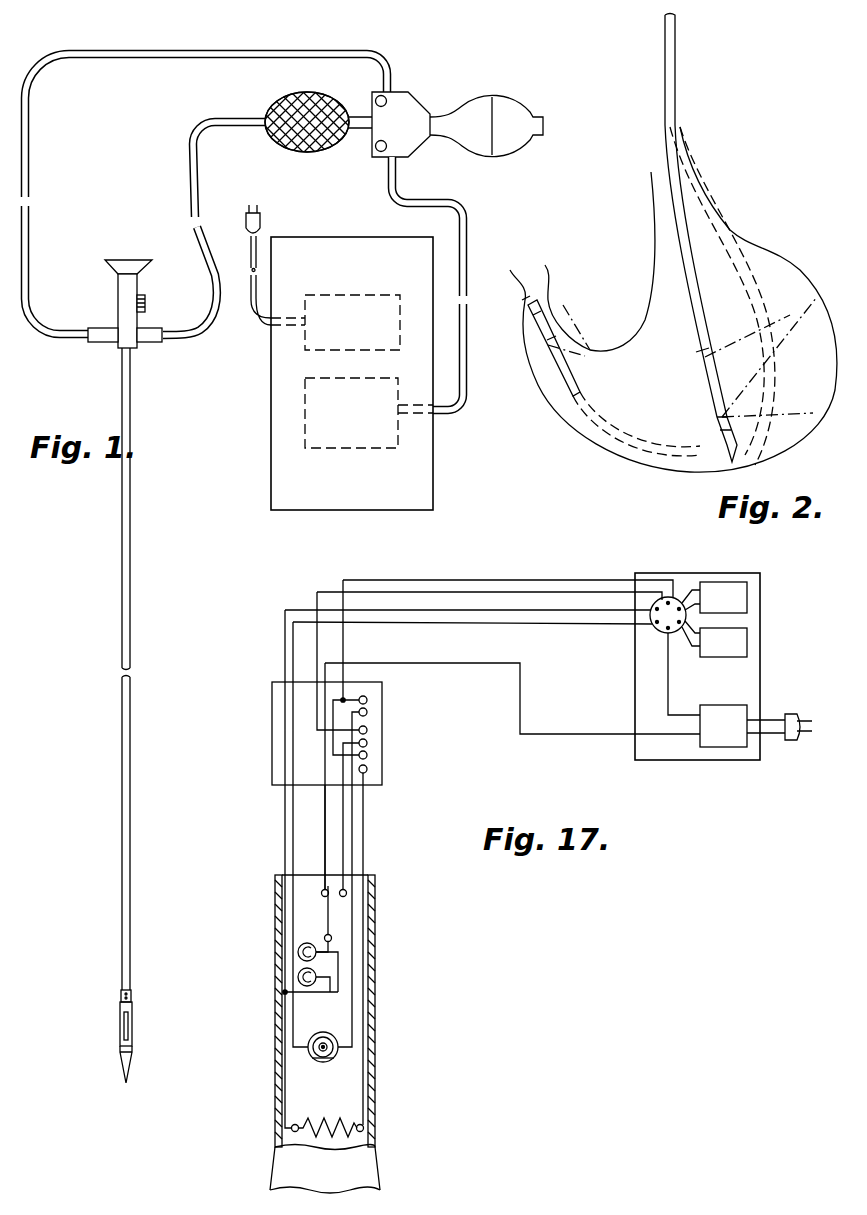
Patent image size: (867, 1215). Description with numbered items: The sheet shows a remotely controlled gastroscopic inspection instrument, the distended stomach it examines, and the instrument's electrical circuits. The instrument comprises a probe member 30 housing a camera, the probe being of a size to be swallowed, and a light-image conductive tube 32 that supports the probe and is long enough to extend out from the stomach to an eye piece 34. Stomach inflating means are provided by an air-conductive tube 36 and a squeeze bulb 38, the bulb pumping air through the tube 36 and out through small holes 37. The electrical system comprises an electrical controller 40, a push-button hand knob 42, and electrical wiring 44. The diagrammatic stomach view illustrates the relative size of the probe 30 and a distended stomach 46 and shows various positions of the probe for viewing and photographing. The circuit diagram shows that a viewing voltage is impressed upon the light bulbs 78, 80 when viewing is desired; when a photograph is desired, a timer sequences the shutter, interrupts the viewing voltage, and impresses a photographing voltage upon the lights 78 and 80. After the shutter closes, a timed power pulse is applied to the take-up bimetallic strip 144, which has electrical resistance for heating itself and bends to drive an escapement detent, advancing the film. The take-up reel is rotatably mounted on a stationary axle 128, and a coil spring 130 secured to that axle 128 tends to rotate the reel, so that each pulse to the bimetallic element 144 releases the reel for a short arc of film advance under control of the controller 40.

In FIG. 1, the probe member 30 is at (132, 1044).
In FIG. 2, the probe member 30 is at (562, 392).
In FIG. 17, the probe member 30 is at (379, 1034).
In FIG. 1, the light-image conductive tube 32 is at (132, 708).
In FIG. 1, the eye piece 34 is at (134, 258).
In FIG. 1, the air-conductive tube 36 is at (196, 196).
In FIG. 1, the small holes 37 is at (129, 989).
In FIG. 1, the squeeze bulb 38 is at (523, 114).
In FIG. 1, the electrical controller 40 is at (360, 224).
In FIG. 17, the electrical controller 40 is at (676, 762).
In FIG. 1, the push-button hand knob 42 is at (410, 90).
In FIG. 17, the push-button hand knob 42 is at (383, 777).
In FIG. 1, the electrical wiring 44 is at (30, 144).
In FIG. 2, the distended stomach 46 is at (796, 270).
In FIG. 17, the light bulb 78 is at (297, 954).
In FIG. 17, the light bulb 80 is at (298, 978).
In FIG. 17, the stationary axle 128 is at (334, 1052).
In FIG. 17, the coil spring 130 is at (312, 1058).
In FIG. 17, the bimetallic strip 144 is at (340, 1128).